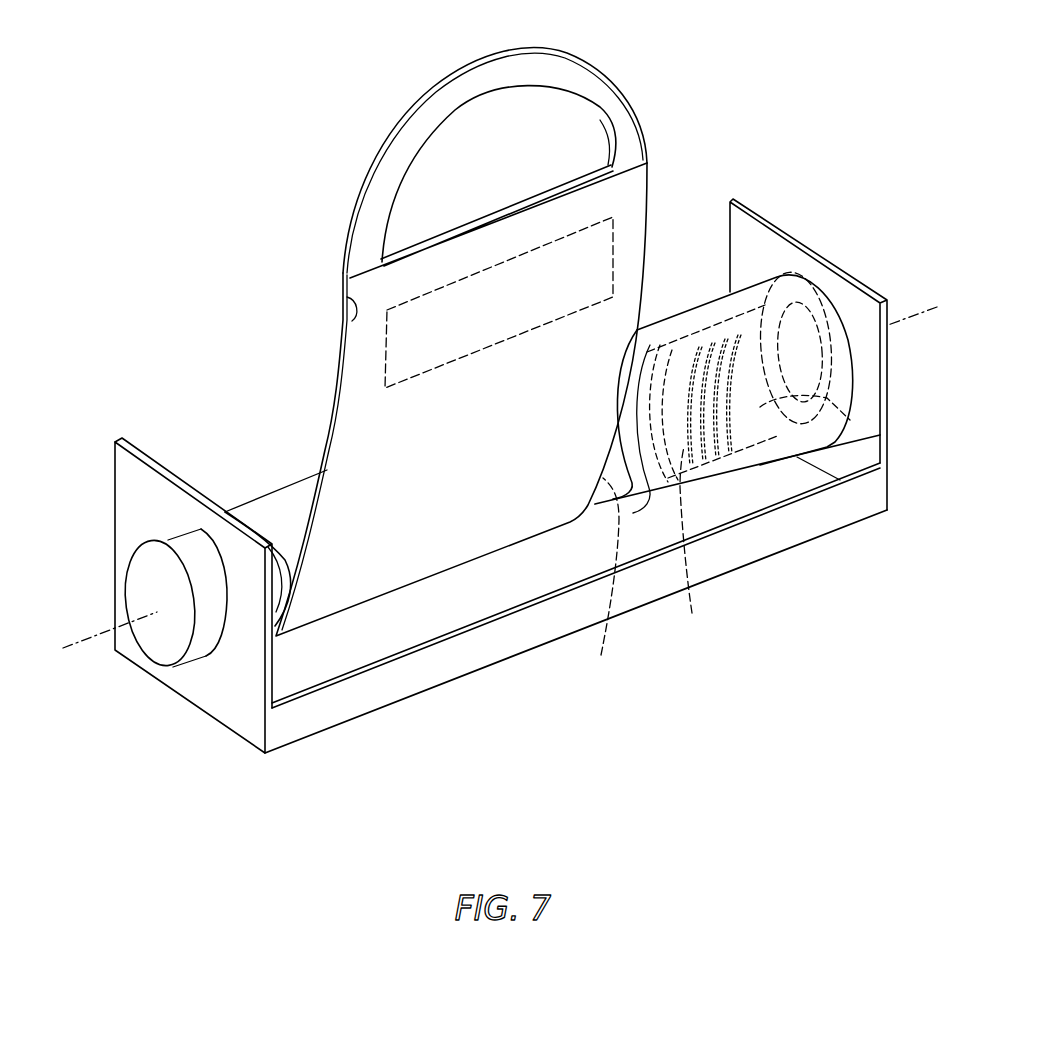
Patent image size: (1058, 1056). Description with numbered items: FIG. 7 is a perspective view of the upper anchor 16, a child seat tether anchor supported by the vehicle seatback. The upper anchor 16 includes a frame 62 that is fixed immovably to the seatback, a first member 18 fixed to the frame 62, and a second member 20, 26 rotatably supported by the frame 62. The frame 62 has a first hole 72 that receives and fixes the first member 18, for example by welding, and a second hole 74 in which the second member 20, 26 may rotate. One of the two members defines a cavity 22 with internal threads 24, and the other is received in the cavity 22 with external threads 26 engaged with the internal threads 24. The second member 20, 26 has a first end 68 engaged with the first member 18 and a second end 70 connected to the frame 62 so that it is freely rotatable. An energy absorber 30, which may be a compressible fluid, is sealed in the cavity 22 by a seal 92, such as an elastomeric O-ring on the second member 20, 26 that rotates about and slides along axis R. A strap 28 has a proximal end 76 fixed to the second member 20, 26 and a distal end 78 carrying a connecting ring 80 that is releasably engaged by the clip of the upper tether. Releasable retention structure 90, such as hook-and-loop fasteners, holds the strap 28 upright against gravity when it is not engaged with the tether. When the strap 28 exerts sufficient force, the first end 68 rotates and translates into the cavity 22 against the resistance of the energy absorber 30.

The upper anchor 16 is at (676, 699).
The first member 18 is at (576, 609).
The second member 20 is at (187, 627).
The cavity 22 is at (792, 338).
The internal threads 24 is at (750, 442).
The second member 26 is at (646, 563).
The strap 28 is at (487, 326).
The energy absorber 30 is at (793, 350).
The frame 62 is at (360, 696).
The first end 68 is at (645, 380).
The second end 70 is at (137, 580).
The first hole 72 is at (850, 401).
The second hole 74 is at (230, 633).
The proximal end 76 is at (280, 578).
The distal end 78 is at (343, 318).
The connecting ring 80 is at (447, 77).
The releasable retention structure 90 is at (614, 228).
The seal 92 is at (634, 400).
The axis R is at (498, 475).